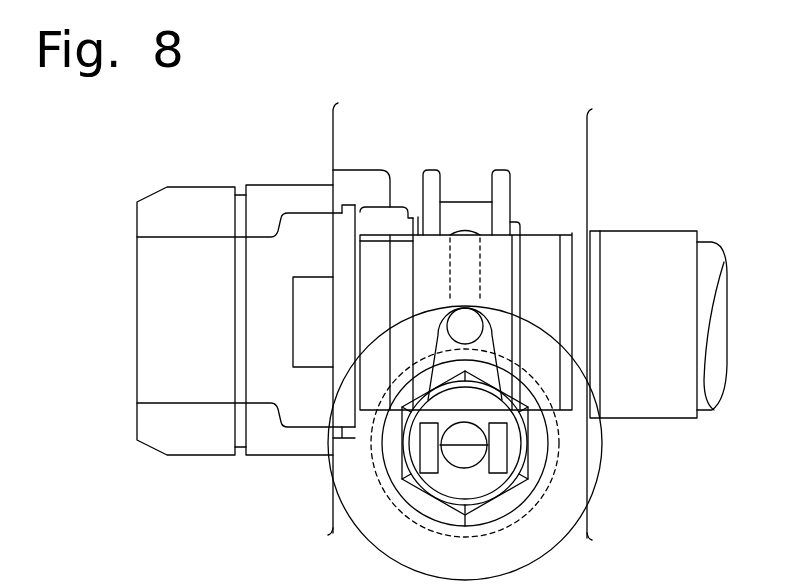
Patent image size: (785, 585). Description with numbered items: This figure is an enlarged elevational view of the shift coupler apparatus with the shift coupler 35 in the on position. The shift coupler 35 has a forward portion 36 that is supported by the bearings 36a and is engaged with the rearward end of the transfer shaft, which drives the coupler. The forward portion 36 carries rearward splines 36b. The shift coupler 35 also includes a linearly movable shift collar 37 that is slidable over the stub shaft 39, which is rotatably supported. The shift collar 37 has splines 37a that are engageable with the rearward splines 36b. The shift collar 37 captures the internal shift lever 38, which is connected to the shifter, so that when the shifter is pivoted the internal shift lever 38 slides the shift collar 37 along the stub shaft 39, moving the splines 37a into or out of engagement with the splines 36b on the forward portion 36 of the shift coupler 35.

The shift coupler 35 is at (503, 123).
The forward portion 36 is at (173, 187).
The bearings 36a is at (178, 230).
The rearward splines 36b is at (375, 185).
The shift collar 37 is at (505, 175).
The splines 37a is at (391, 229).
The internal shift lever 38 is at (465, 303).
The stub shaft 39 is at (645, 262).